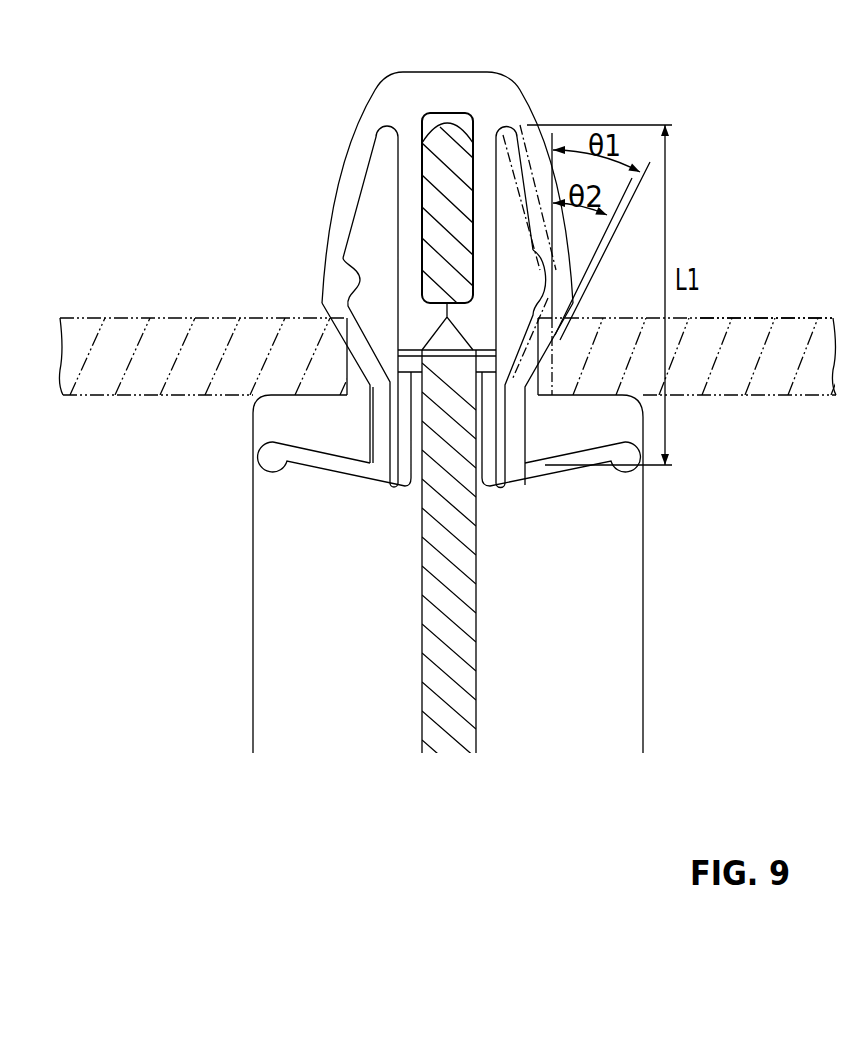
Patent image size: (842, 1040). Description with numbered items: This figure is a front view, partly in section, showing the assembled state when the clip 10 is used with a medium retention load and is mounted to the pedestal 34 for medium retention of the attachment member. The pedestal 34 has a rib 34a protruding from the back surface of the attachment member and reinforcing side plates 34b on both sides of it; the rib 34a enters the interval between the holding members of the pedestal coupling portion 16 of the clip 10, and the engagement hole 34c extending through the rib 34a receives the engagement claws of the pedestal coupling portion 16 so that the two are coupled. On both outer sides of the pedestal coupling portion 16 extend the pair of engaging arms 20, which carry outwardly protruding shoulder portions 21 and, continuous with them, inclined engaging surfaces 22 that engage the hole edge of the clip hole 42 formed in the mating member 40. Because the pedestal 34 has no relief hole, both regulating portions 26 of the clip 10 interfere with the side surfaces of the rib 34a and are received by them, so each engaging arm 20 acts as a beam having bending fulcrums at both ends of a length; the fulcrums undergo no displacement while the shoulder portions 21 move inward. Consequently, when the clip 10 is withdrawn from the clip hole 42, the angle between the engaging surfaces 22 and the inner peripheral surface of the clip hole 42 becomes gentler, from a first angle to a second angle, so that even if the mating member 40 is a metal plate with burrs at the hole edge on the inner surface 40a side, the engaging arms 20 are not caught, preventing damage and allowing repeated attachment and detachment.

The clip 10 is at (353, 78).
The pedestal coupling portion 16 is at (381, 207).
The engaging arms 20 is at (350, 155).
The shoulder portions 21 is at (423, 350).
The engaging surfaces 22 is at (337, 318).
The regulating portions 26 is at (410, 420).
The pedestal 34 is at (209, 607).
The rib 34a is at (456, 150).
The reinforcing side plates 34b is at (620, 574).
The engagement hole 34c is at (445, 342).
The mating member 40 is at (100, 390).
The inner surface 40a is at (767, 307).
The clip hole 42 is at (350, 400).